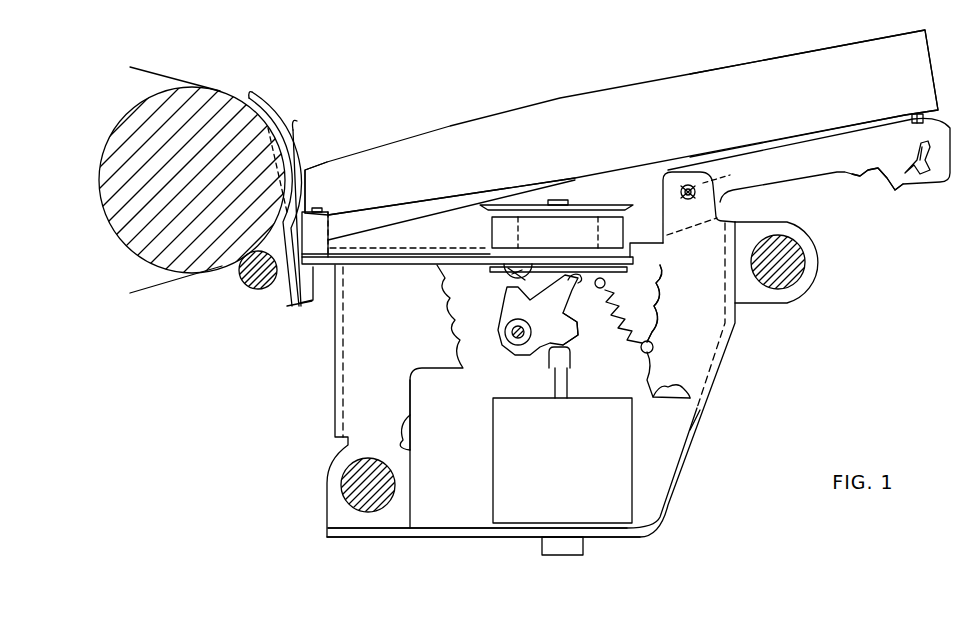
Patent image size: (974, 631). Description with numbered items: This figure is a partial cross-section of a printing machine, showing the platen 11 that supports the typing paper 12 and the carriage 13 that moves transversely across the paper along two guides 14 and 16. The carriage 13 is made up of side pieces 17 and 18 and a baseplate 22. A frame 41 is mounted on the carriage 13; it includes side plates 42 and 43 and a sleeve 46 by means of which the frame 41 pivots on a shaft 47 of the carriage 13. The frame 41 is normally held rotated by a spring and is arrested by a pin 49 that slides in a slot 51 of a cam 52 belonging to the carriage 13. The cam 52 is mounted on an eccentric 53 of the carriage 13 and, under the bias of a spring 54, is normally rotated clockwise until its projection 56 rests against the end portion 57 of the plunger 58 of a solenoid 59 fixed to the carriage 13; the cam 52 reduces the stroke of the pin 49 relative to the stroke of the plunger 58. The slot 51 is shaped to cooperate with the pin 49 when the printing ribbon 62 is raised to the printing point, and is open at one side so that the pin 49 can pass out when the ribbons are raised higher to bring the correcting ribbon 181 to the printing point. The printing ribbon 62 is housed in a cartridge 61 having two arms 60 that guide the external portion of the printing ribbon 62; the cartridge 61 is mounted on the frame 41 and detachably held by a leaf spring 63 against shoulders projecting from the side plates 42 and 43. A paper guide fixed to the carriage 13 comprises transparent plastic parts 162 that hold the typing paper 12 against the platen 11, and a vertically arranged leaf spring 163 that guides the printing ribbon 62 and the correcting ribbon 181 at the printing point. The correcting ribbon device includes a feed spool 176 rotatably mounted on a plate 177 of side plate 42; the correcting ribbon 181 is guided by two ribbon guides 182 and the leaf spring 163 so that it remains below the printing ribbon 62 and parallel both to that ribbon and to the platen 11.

The platen 11 is at (168, 258).
The typing paper 12 is at (160, 73).
The carriage 13 is at (703, 432).
The guide 14 is at (783, 278).
The guide 16 is at (383, 488).
The side piece 17 is at (403, 395).
The side piece 18 is at (405, 430).
The baseplate 22 is at (668, 493).
The frame 41 is at (783, 185).
The side plate 42 is at (938, 172).
The side plate 43 is at (882, 188).
The sleeve 46 is at (709, 200).
The shaft 47 is at (688, 200).
The pin 49 is at (505, 284).
The slot 51 is at (565, 283).
The cam 52 is at (508, 312).
The eccentric 53 is at (505, 335).
The spring 54 is at (650, 312).
The projection 56 is at (579, 330).
The end portion 57 is at (570, 358).
The plunger 58 is at (567, 383).
The solenoid 59 is at (622, 457).
The arm 60 is at (413, 143).
The cartridge 61 is at (713, 80).
The printing ribbon 62 is at (306, 183).
The leaf spring 63 is at (914, 113).
The part of transparent plastics material 162 is at (272, 108).
The leaf spring 163 is at (297, 125).
The feed spool 176 is at (620, 205).
The plate 177 is at (656, 290).
The correcting ribbon 181 is at (380, 220).
The ribbon guide 182 is at (327, 210).